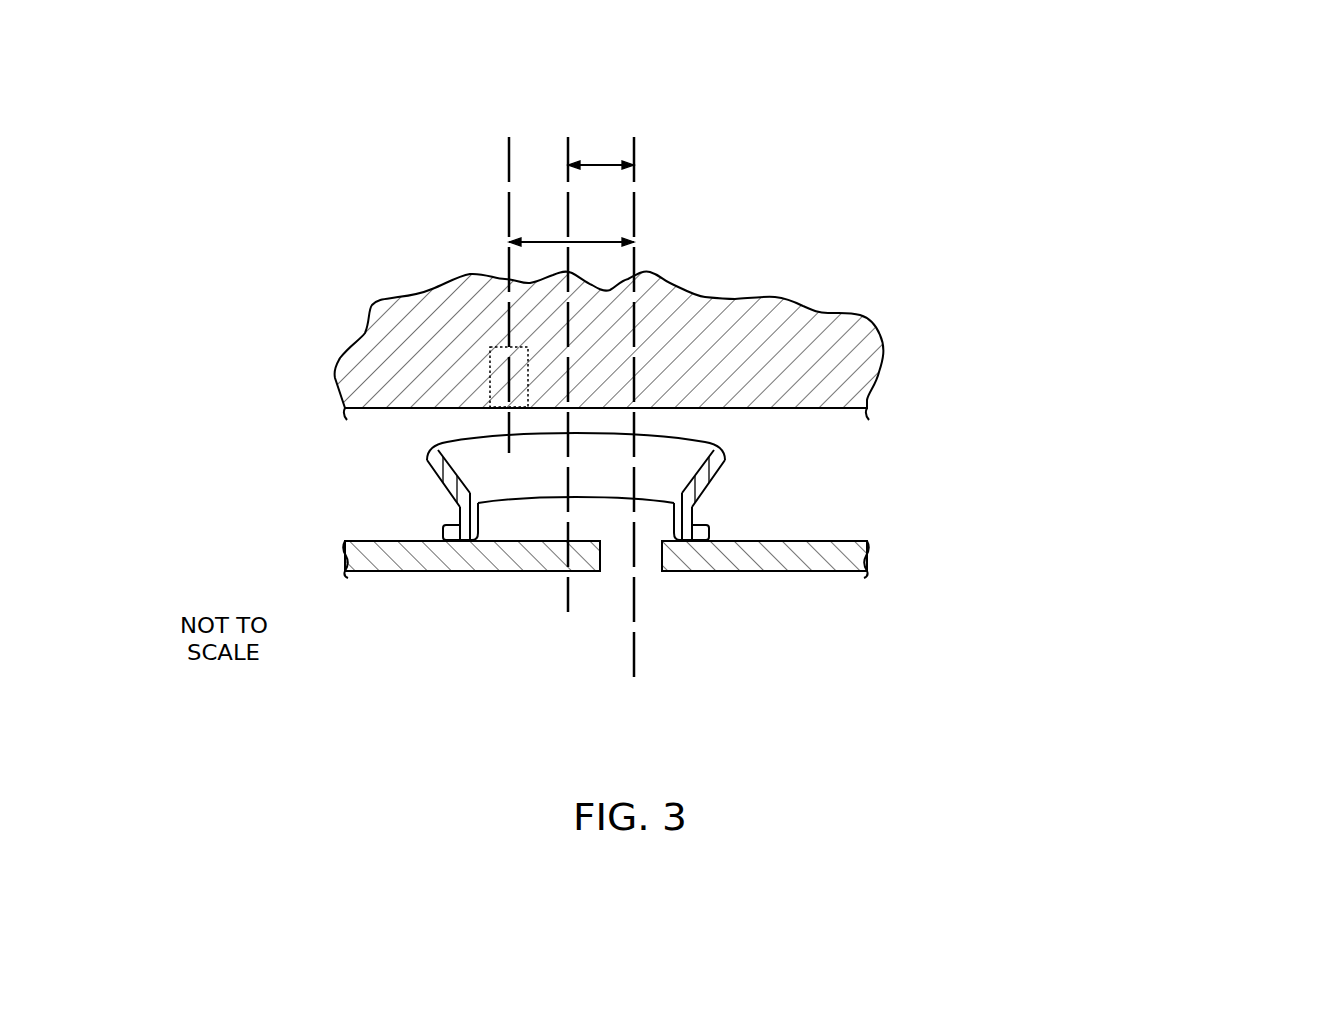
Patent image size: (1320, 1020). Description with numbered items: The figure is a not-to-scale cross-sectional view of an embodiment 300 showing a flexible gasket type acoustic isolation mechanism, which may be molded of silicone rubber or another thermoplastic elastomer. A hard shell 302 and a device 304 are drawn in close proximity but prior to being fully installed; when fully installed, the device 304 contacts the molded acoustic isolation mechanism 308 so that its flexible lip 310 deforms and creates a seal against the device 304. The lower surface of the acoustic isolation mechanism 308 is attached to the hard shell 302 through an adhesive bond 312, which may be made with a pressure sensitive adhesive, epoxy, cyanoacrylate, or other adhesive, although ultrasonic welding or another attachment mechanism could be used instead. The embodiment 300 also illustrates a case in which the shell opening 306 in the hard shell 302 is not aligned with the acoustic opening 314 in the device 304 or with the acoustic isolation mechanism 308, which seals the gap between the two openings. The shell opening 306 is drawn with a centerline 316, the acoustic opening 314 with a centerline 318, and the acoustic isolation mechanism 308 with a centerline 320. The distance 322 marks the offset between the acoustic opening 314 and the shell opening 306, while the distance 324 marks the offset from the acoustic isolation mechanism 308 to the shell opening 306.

The embodiment 300 is at (938, 198).
The hard shell 302 is at (815, 572).
The device 304 is at (880, 330).
The shell opening 306 is at (600, 556).
The molded acoustic isolation mechanism 308 is at (693, 505).
The flexible lip 310 is at (727, 462).
The adhesive bond 312 is at (688, 545).
The acoustic opening 314 is at (498, 410).
The centerline 316 is at (633, 657).
The centerline 318 is at (509, 210).
The centerline 320 is at (568, 152).
The distance 322 is at (587, 242).
The distance 324 is at (603, 165).